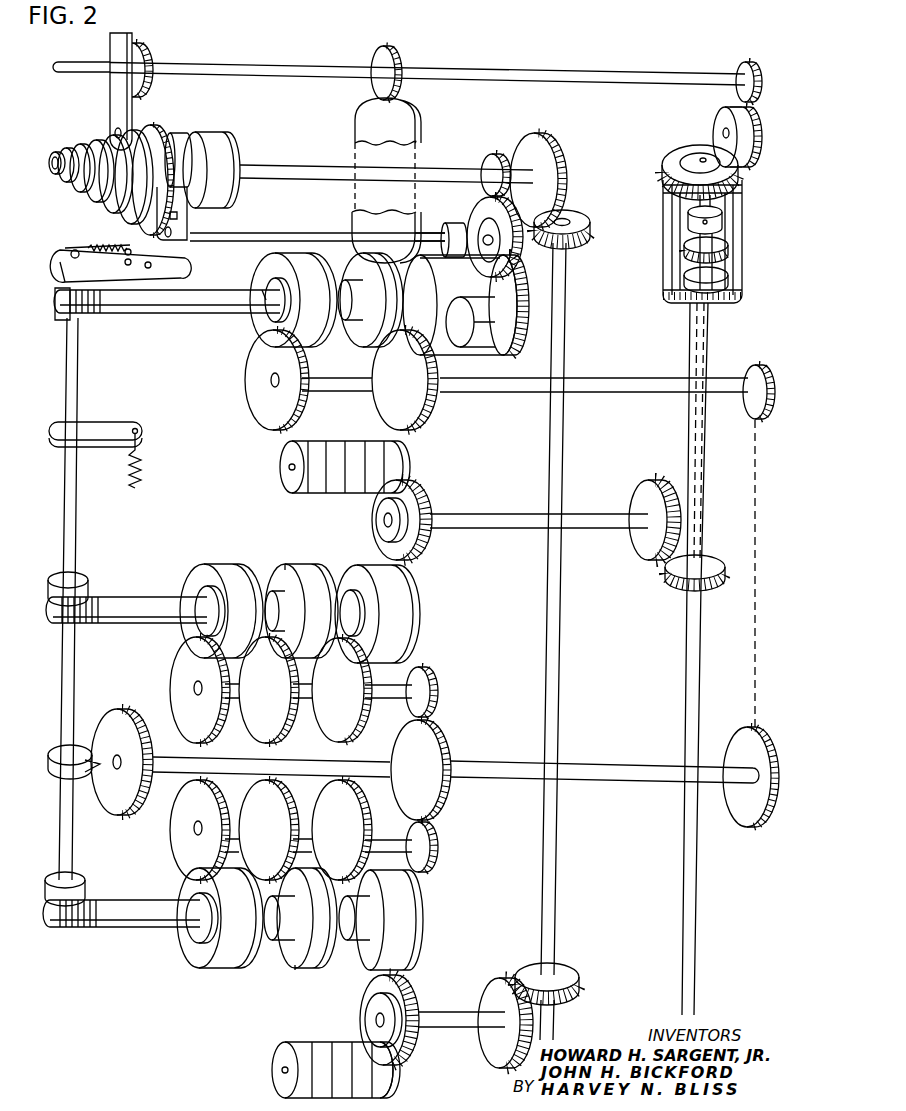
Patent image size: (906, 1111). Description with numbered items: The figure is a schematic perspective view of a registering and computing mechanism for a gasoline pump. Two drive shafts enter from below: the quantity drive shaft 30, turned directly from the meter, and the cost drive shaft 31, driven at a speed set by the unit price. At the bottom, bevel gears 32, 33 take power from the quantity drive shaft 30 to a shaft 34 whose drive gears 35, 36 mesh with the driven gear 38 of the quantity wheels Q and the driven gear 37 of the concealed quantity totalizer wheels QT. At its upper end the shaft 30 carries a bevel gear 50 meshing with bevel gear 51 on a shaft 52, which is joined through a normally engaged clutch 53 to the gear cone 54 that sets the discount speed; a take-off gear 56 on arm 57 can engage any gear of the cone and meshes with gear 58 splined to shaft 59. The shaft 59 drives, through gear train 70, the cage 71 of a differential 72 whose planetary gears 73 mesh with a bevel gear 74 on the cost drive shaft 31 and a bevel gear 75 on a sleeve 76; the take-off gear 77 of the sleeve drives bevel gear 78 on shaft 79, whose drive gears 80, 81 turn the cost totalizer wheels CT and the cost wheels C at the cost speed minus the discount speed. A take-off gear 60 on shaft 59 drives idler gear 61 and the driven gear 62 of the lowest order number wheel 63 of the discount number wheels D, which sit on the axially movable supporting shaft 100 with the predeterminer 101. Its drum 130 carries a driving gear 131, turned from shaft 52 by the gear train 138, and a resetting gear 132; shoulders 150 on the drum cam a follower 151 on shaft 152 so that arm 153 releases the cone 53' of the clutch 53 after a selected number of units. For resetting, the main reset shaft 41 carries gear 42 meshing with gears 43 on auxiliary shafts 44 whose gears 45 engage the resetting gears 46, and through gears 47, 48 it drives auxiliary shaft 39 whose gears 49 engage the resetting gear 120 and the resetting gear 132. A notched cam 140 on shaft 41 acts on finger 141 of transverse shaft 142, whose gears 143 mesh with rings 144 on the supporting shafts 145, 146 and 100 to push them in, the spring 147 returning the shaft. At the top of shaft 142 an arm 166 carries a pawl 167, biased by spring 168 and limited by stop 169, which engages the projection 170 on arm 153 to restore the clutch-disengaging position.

The quantity drive shaft 30 is at (555, 918).
The cost drive shaft 31 is at (698, 919).
The bevel gear 32 is at (562, 967).
The bevel gear 33 is at (493, 985).
The shaft 34 is at (438, 1013).
The drive gear 35 is at (413, 986).
The drive gear 36 is at (368, 1006).
The driven gear 37 is at (397, 1088).
The driven gear 38 is at (422, 897).
The auxiliary shaft 39 is at (585, 378).
The main reset shaft 41 is at (598, 766).
The gear 42 is at (444, 742).
The gears 43 is at (432, 683).
The auxiliary shafts 44 is at (395, 697).
The gears 45 is at (180, 668).
The resetting gears 46 is at (212, 568).
The gear 47 is at (757, 727).
The gear 48 is at (765, 367).
The gears 49 is at (272, 422).
The bevel gear 50 is at (578, 218).
The bevel gear 51 is at (548, 150).
The shaft 52 is at (283, 166).
The clutch 53 is at (213, 155).
The cone of the clutch 53' is at (182, 144).
The gear cone 54 is at (80, 135).
The take-off gear 56 is at (112, 115).
The arm 57 is at (115, 43).
The gear 58 is at (140, 52).
The shaft 59 is at (235, 62).
The take-off gear 60 is at (378, 48).
The idler gear 61 is at (365, 118).
The driven gear 62 is at (425, 228).
The lowest order number wheel 63 is at (380, 245).
The gear train 70 is at (761, 106).
The cage 71 is at (665, 182).
The differential 72 is at (749, 201).
The planetary gears 73 is at (740, 243).
The bevel gear 74 is at (718, 212).
The bevel gear 75 is at (740, 278).
The sleeve 76 is at (712, 345).
The take-off gear 77 is at (710, 560).
The bevel gear 78 is at (660, 468).
The shaft 79 is at (478, 512).
The drive gear 80 is at (378, 521).
The drive gear 81 is at (428, 492).
The supporting shaft 100 is at (180, 312).
The predetermining or programming mechanism 101 is at (517, 300).
The resetting gear 120 is at (262, 290).
The drum 130 is at (445, 360).
The driving gear 131 is at (517, 335).
The resetting gear 132 is at (425, 290).
The train of gears 138 is at (480, 195).
The notched disc or cam 140 is at (117, 718).
The finger 141 is at (50, 750).
The transverse shaft 142 is at (67, 480).
The gears 143 is at (55, 298).
The rings 144 is at (90, 320).
The number wheel supporting shaft 145 is at (115, 925).
The number wheel supporting shaft 146 is at (113, 597).
The spring 147 is at (146, 483).
The shoulders or steps 150 is at (460, 318).
The follower 151 is at (458, 225).
The shaft 152 is at (285, 232).
The arm 153 is at (212, 192).
The arm 166 is at (72, 275).
The pawl 167 is at (185, 258).
The spring 168 is at (100, 245).
The stop 169 is at (75, 250).
The projection 170 is at (180, 216).
The cost wheels C is at (292, 565).
The cost totalizer wheels CT is at (290, 478).
The discount number wheels D is at (250, 328).
The quantity wheels Q is at (290, 975).
The quantity totalizer wheels QT is at (272, 1074).